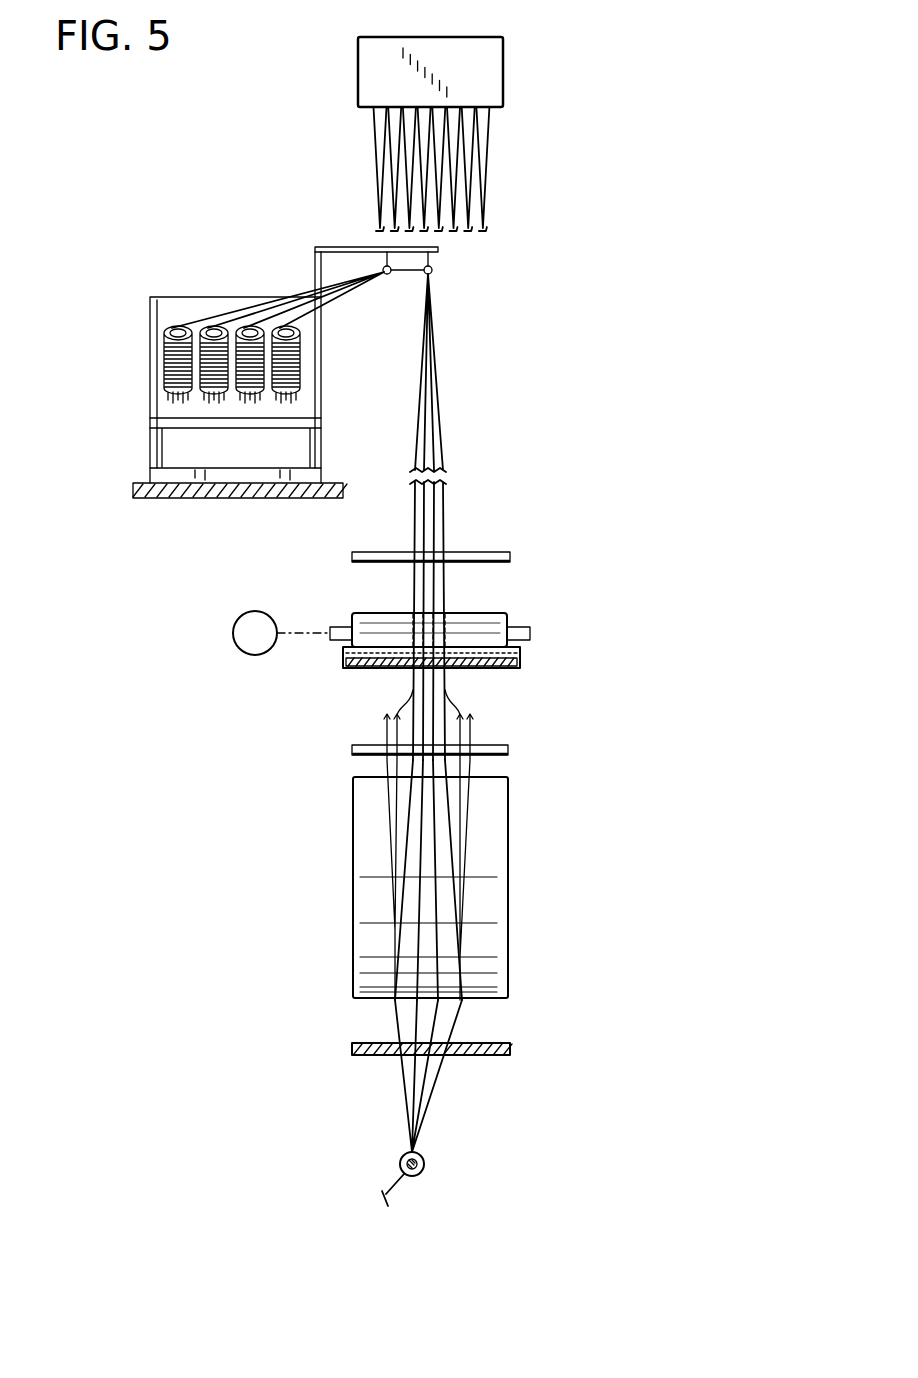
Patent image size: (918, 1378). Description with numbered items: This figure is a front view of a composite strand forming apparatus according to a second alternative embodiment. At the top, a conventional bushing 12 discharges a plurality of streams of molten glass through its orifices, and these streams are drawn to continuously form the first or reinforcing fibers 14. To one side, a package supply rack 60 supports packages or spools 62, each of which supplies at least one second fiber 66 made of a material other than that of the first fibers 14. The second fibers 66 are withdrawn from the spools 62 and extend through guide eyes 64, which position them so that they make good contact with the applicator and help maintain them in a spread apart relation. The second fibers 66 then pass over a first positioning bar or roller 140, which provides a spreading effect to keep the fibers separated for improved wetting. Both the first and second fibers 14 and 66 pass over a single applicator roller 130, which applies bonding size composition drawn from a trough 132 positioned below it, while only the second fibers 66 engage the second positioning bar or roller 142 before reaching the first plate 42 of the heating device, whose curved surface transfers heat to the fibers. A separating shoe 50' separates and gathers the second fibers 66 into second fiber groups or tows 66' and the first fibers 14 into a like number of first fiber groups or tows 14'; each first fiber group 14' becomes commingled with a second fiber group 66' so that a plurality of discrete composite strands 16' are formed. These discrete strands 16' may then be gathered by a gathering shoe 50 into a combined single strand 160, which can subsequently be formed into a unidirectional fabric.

The bushing 12 is at (502, 66).
The first fibers 14 is at (480, 169).
The guide eyes 64 is at (384, 267).
The package supply rack 60 is at (150, 338).
The packages or spools 62 is at (283, 326).
The second fibers 66 is at (278, 324).
The second fiber groups or tows 66' is at (485, 517).
The first positioning bar or roller 140 is at (480, 551).
The applicator roller 130 is at (490, 619).
The trough 132 is at (520, 658).
The first fiber groups or tows 14' is at (423, 845).
The second positioning bar or roller 142 is at (508, 750).
The first plate 42 is at (500, 812).
The separating shoe 50' is at (488, 1035).
The discrete composite strands 16' is at (410, 1076).
The gathering shoe 50 is at (468, 1167).
The combined single strand 160 is at (395, 1190).